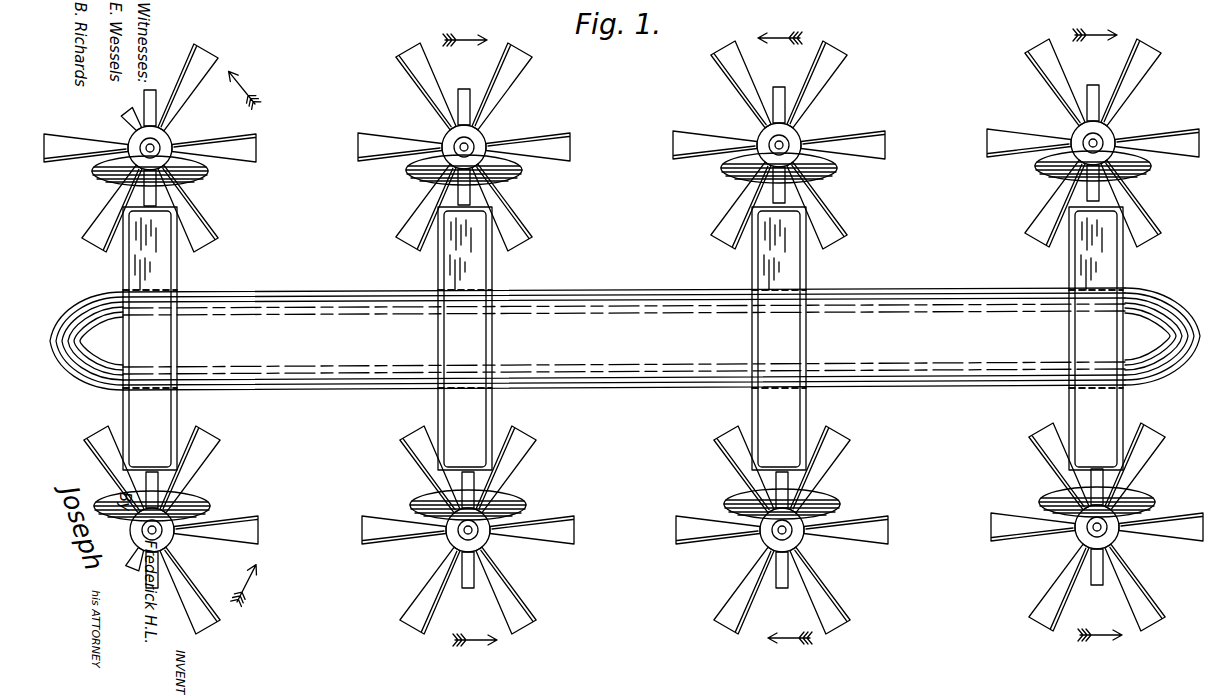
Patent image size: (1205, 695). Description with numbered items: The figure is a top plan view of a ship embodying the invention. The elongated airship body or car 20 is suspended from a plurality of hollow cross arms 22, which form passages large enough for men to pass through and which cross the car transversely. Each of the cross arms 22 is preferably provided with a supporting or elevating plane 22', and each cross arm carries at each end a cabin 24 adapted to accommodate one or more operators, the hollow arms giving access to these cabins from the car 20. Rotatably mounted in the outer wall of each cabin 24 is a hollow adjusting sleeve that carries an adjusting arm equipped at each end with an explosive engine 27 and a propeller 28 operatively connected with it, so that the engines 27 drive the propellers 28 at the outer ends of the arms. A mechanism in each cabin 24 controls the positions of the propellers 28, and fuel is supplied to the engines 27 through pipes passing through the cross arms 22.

The airship body or car 20 is at (625, 339).
The hollow cross arm 22 is at (644, 338).
The supporting or elevating plane 22' is at (643, 339).
The cabin 24 is at (206, 177).
The explosive engine 27 is at (142, 102).
The propeller 28 is at (187, 97).